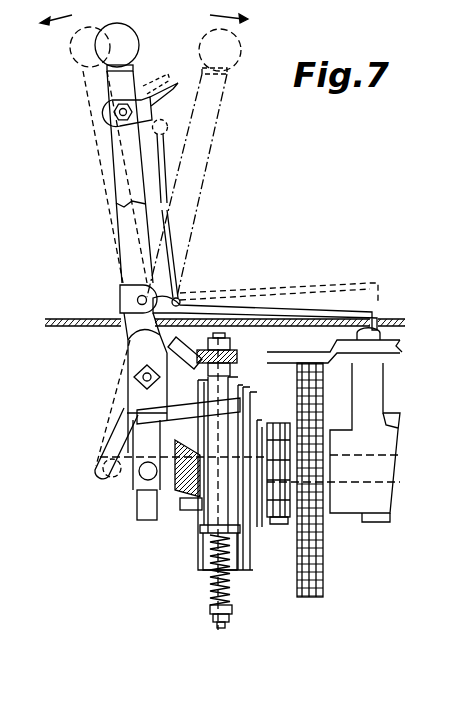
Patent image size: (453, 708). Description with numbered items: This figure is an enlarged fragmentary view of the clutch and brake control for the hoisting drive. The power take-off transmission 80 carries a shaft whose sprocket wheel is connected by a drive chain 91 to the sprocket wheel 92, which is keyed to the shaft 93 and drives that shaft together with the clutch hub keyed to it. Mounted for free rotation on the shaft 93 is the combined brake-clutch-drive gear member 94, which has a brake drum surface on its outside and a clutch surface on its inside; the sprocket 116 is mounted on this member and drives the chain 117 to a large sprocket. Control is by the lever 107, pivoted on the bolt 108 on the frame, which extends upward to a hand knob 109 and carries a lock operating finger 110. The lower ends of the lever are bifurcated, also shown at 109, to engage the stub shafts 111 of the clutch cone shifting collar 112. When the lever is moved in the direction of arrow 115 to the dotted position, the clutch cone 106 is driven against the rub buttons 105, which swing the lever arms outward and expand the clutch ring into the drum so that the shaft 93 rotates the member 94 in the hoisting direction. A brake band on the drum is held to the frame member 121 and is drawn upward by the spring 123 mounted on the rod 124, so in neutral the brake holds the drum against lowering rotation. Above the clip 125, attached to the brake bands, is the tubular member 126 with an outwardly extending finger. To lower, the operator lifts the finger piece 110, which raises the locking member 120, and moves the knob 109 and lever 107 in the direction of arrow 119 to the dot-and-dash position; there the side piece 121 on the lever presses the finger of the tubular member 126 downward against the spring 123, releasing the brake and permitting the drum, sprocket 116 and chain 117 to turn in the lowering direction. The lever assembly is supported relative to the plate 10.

The mounting plate 10 is at (62, 316).
The power take-off transmission 80 is at (393, 409).
The drive chain 91 is at (323, 586).
The sprocket wheel 92 is at (308, 313).
The shaft 93 is at (378, 484).
The combined brake-clutch-drive gear member 94 is at (247, 395).
The rub buttons 105 is at (192, 502).
The clutch cone 106 is at (180, 503).
The lever 107 is at (122, 175).
The bolt 108 is at (137, 378).
The hand knob 109 is at (127, 33).
The lock operating finger 110 is at (172, 68).
The stub shafts 111 is at (140, 472).
The clutch cone shifting collar 112 is at (140, 503).
The arrow 115 is at (54, 31).
The sprocket 116 is at (288, 497).
The chain 117 is at (280, 520).
The arrow 119 is at (213, 153).
The locking member 120 is at (332, 307).
The side piece 121 is at (257, 337).
The spring 123 is at (212, 592).
The rod 124 is at (218, 332).
The clip 125 is at (202, 537).
The tubular member 126 is at (231, 512).